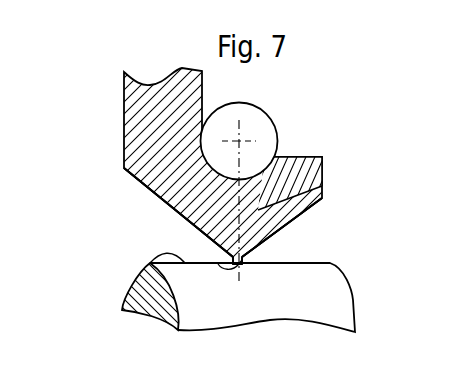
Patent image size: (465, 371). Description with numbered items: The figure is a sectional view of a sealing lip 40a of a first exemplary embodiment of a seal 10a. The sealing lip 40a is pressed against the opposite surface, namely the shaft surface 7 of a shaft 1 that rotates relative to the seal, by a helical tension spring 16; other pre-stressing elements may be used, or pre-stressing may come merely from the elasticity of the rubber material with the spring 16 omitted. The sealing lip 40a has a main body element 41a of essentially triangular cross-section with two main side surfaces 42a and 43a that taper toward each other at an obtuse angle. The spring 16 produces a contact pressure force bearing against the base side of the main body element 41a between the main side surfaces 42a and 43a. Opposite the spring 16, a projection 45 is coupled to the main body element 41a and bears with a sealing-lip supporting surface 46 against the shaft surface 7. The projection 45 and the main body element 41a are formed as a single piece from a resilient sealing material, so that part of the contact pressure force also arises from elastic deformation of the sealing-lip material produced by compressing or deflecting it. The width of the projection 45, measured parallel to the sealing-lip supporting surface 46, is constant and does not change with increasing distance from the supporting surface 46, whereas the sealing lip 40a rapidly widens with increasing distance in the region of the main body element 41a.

The seal 10a is at (123, 117).
The helical tension spring 16 is at (258, 122).
The sealing lip 40a is at (166, 207).
The main body element 41a is at (322, 183).
The main side surface 42a is at (207, 236).
The main side surface 43a is at (272, 237).
The projection 45 is at (242, 262).
The sealing-lip supporting surface 46 is at (233, 262).
The shaft surface 7 is at (150, 263).
The shaft 1 is at (193, 298).